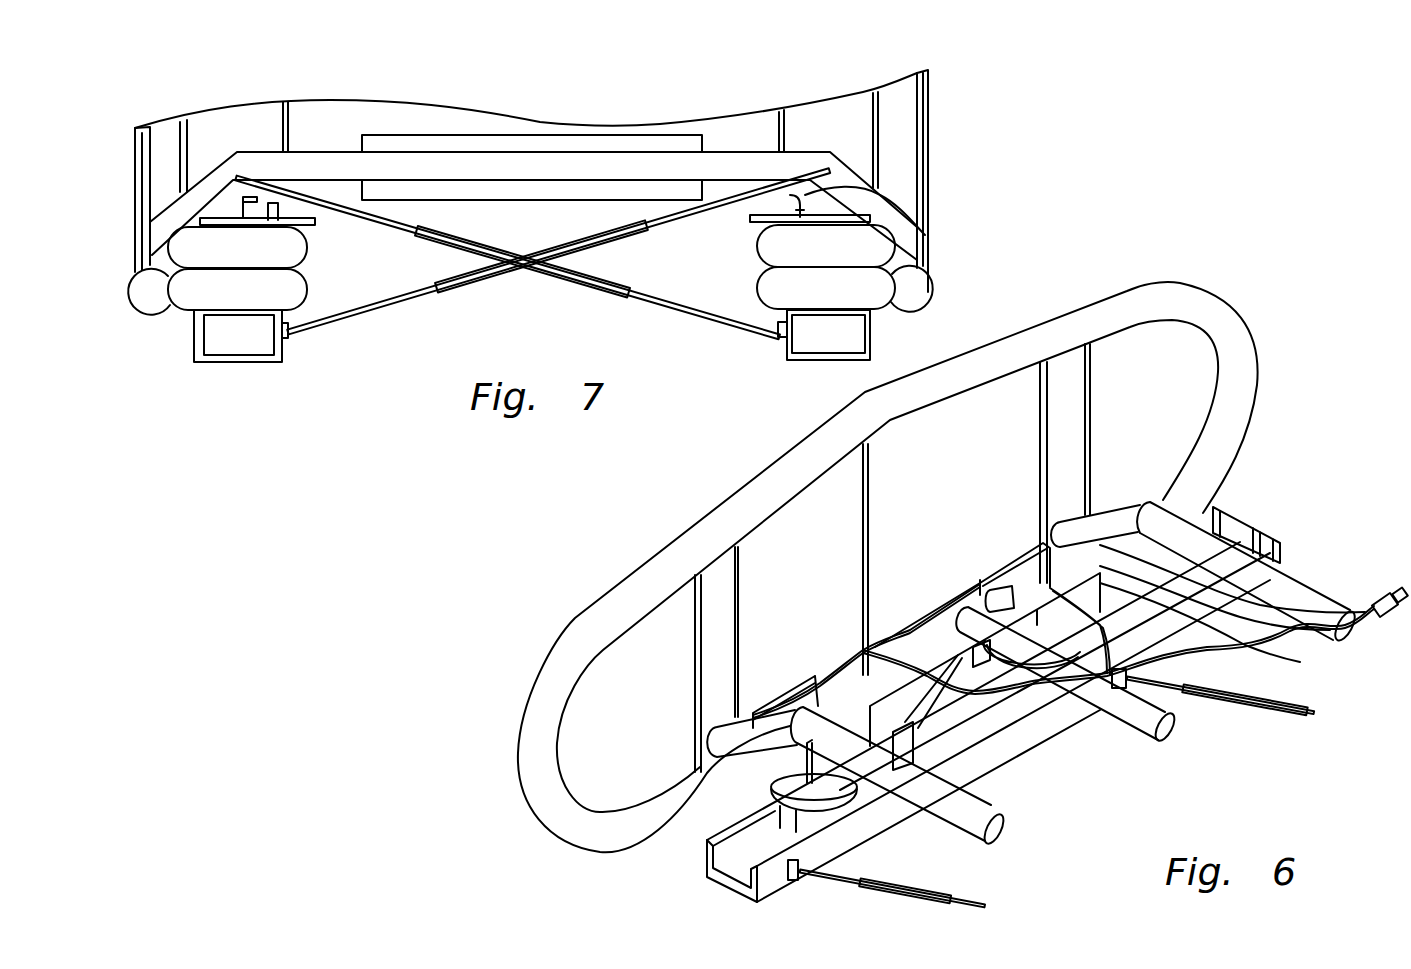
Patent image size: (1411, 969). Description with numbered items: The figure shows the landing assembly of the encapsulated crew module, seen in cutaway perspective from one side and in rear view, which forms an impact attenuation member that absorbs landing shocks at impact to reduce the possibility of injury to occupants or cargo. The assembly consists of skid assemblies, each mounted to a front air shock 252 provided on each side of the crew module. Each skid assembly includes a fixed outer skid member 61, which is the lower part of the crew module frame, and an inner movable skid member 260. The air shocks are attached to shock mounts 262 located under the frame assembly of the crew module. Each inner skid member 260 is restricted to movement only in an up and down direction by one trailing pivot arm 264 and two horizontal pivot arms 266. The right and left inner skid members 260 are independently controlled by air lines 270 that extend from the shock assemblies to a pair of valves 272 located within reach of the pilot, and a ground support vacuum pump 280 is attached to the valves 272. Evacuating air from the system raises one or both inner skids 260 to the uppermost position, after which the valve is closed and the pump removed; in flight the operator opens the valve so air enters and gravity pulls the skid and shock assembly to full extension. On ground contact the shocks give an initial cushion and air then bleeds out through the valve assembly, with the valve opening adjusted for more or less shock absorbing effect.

In FIG. 7, the fixed outer skid member 61 is at (160, 289).
In FIG. 6, the fixed outer skid member 61 is at (553, 817).
In FIG. 7, the front air shock 252 is at (297, 290).
In FIG. 6, the front air shock 252 is at (830, 800).
In FIG. 7, the inner movable skid member 260 is at (258, 362).
In FIG. 6, the inner movable skid member 260 is at (735, 868).
In FIG. 7, the shock mount 262 is at (287, 127).
In FIG. 6, the shock mount 262 is at (1223, 483).
In FIG. 6, the trailing pivot arm 264 is at (965, 700).
In FIG. 6, the horizontal pivot arm 266 is at (1280, 710).
In FIG. 7, the air line 270 is at (240, 197).
In FIG. 6, the air line 270 is at (1262, 648).
In FIG. 6, the valve 272 is at (1390, 616).
In FIG. 7, the ground support vacuum pump 280 is at (633, 140).